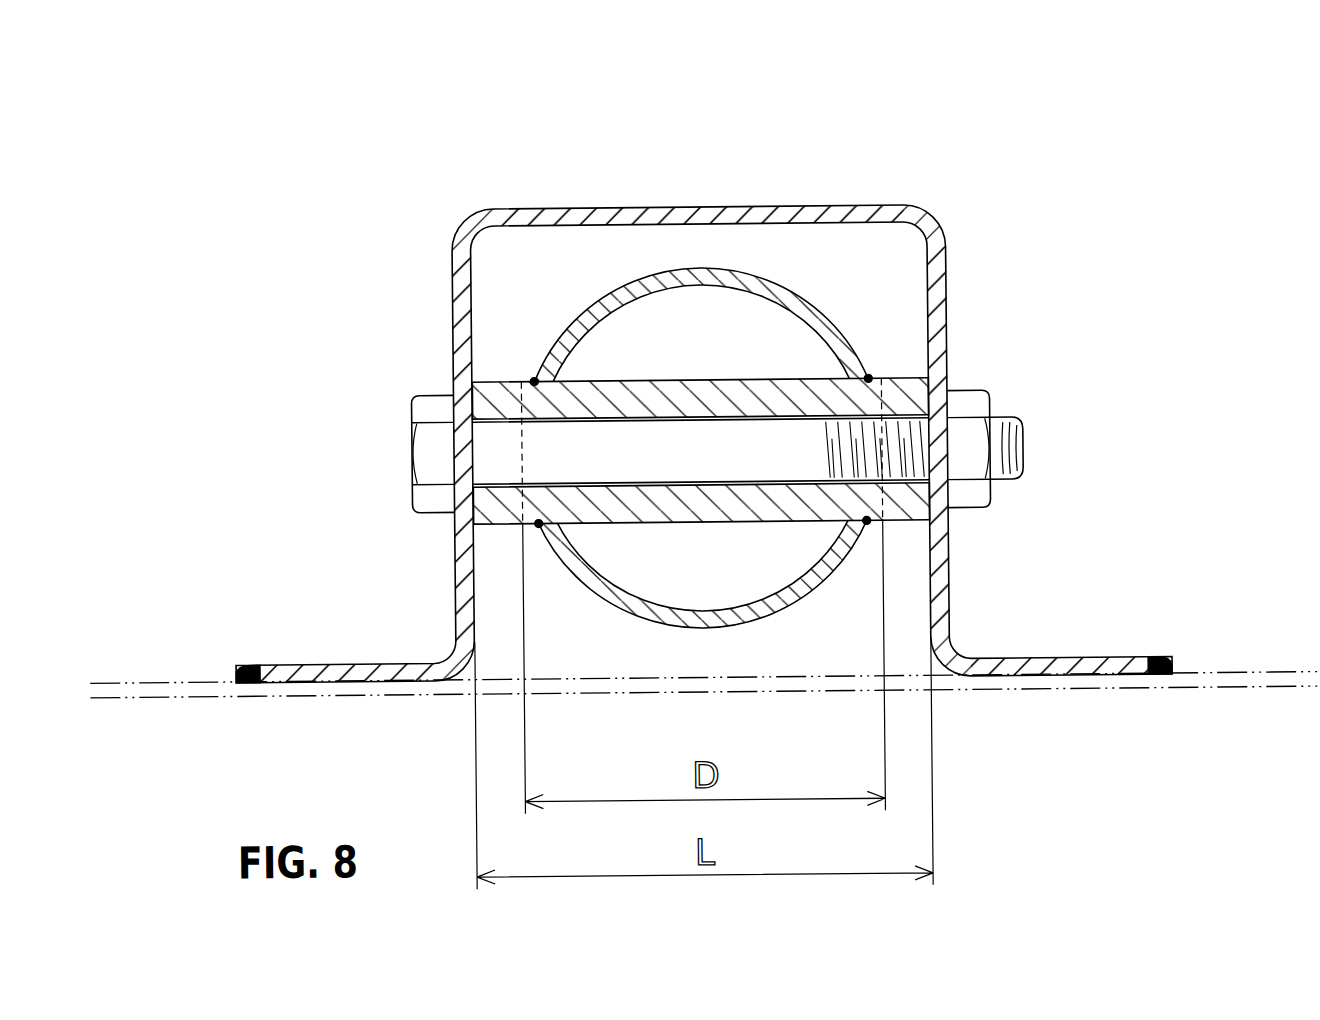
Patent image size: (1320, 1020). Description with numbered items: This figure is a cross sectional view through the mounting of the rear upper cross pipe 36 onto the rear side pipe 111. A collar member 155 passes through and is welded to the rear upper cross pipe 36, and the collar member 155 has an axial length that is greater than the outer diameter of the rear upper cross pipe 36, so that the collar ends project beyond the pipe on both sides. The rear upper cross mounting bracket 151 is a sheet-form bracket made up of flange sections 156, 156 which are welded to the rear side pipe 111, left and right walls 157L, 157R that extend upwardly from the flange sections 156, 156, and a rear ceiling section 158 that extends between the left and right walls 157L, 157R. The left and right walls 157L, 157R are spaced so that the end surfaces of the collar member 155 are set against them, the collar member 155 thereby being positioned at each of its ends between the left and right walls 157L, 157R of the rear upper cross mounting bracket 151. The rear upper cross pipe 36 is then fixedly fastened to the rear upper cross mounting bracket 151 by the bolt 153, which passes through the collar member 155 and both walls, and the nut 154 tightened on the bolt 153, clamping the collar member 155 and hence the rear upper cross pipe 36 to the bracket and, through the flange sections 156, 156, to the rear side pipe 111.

The rear upper cross mounting bracket 151 is at (951, 254).
The rear ceiling section 158 is at (581, 214).
The left wall 157L is at (454, 271).
The right wall 157R is at (950, 291).
The flange sections 156 is at (370, 660).
The rear upper cross pipe 36 is at (843, 300).
The collar member 155 is at (726, 394).
The bolt 153 is at (432, 453).
The nut 154 is at (965, 403).
The rear side pipe 111 is at (1205, 698).